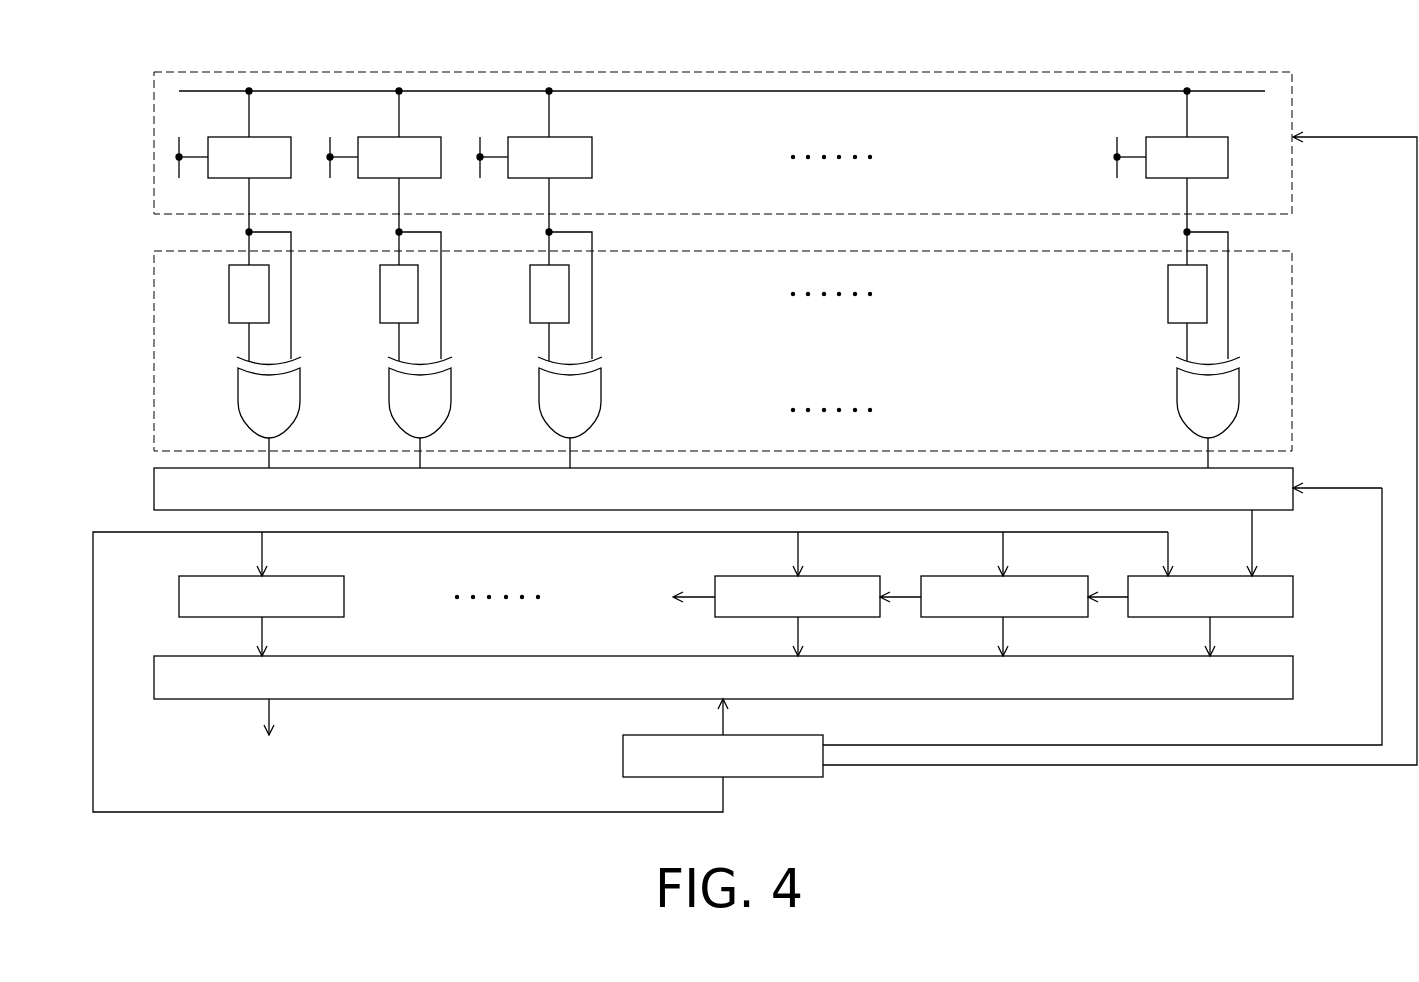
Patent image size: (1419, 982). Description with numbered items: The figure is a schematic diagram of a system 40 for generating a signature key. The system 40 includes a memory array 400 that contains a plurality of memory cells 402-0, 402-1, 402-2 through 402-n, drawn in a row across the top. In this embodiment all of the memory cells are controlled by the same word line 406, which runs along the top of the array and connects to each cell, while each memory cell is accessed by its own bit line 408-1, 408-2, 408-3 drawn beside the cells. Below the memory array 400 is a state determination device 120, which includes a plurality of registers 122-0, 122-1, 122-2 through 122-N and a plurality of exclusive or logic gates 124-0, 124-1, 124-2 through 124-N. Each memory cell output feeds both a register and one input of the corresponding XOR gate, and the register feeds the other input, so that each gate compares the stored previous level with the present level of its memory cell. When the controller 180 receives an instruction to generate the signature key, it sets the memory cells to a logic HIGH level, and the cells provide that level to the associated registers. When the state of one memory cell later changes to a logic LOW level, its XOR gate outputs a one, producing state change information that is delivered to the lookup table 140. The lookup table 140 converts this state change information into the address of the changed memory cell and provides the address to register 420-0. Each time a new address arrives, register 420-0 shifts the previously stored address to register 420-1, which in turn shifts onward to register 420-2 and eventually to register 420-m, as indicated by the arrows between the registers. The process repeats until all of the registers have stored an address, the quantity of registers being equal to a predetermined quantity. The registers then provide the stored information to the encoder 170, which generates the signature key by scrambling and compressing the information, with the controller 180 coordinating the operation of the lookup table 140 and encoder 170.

The system for generating a signature key 40 is at (77, 44).
The memory array 400 is at (1292, 93).
The memory cell 402-0 is at (287, 118).
The memory cell 402-1 is at (437, 118).
The memory cell 402-2 is at (588, 118).
The memory cell 402-n is at (1242, 118).
The word line 406 is at (973, 92).
The bit line 408-1 is at (212, 120).
The bit line 408-2 is at (330, 178).
The bit line 408-3 is at (480, 178).
The state determination device 120 is at (1292, 341).
The register 122-0 is at (229, 298).
The register 122-1 is at (380, 298).
The register 122-2 is at (530, 298).
The register 122-N is at (1168, 298).
The exclusive or (XOR) logic gate 124-0 is at (238, 390).
The exclusive or (XOR) logic gate 124-1 is at (389, 390).
The exclusive or (XOR) logic gate 124-2 is at (539, 390).
The exclusive or (XOR) logic gate 124-N is at (1178, 390).
The lookup table 140 is at (1293, 470).
The encoder 170 is at (1293, 672).
The controller 180 is at (623, 752).
The register 420-m is at (228, 617).
The register 420-2 is at (766, 617).
The register 420-1 is at (972, 617).
The register 420-0 is at (1178, 617).